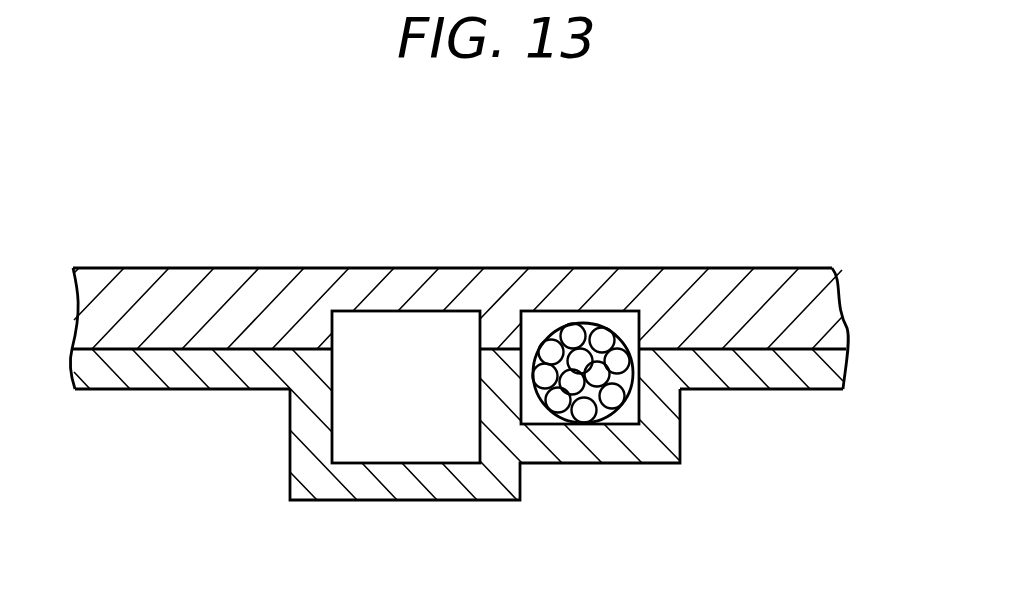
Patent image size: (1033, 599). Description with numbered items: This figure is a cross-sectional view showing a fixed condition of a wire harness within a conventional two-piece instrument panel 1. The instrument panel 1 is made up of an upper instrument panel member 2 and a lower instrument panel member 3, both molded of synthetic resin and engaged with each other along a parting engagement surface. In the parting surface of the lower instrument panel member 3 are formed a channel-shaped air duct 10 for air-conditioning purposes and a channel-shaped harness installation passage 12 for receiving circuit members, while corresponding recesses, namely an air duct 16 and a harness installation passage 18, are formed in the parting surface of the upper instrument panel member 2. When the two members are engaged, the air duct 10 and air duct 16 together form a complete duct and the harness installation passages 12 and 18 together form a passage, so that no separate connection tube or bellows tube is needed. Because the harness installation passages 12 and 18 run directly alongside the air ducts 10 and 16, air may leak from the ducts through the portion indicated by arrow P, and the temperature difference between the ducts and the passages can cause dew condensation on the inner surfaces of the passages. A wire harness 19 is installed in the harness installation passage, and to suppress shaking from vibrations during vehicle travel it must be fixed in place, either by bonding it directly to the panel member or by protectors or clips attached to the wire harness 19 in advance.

The instrument panel 1 is at (690, 226).
The upper instrument panel member 2 is at (777, 268).
The lower instrument panel member 3 is at (757, 391).
The air duct 10 is at (424, 463).
The harness installation passage 12 is at (532, 428).
The air duct 16 is at (386, 317).
The harness installation passage 18 is at (549, 316).
The wire harness 19 is at (597, 325).
The arrow P is at (480, 348).